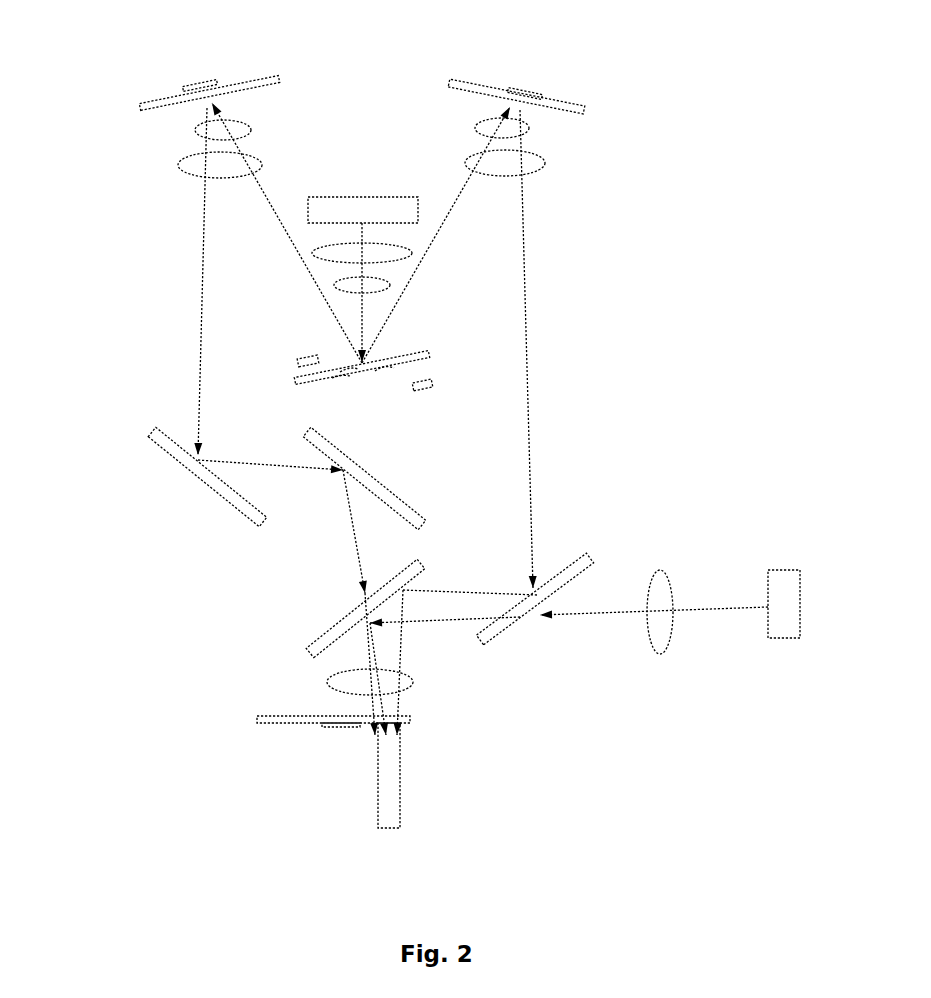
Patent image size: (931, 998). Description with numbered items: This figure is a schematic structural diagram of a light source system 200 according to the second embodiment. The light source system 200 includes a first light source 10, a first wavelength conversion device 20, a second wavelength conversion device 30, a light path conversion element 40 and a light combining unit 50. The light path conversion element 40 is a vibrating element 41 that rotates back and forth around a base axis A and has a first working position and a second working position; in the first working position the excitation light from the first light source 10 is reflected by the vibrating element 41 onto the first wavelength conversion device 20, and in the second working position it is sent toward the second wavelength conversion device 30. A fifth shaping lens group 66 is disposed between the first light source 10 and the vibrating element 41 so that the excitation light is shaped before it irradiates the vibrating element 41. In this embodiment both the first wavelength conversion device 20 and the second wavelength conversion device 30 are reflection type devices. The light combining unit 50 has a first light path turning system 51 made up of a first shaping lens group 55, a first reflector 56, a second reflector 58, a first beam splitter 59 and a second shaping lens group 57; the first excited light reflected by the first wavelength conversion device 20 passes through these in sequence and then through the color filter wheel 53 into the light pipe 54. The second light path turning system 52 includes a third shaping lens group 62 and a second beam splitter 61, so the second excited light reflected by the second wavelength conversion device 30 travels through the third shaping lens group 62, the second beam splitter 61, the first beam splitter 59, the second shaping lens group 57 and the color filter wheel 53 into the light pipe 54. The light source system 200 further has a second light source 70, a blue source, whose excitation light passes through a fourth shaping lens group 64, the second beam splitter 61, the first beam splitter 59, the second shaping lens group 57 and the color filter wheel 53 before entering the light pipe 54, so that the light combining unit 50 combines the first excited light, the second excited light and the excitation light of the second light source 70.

The light source system 200 is at (378, 46).
The first wavelength conversion device 20 is at (247, 82).
The second wavelength conversion device 30 is at (490, 82).
The first light source 10 is at (365, 197).
The first shaping lens group 55 is at (172, 165).
The third shaping lens group 62 is at (548, 155).
The fifth shaping lens group 66 is at (399, 280).
The light path conversion element 40 is at (363, 394).
The vibrating element 41 is at (317, 386).
The base axis A is at (366, 375).
The first light path turning system 51 is at (168, 496).
The first reflector 56 is at (235, 505).
The second reflector 58 is at (372, 473).
The second light path turning system 52 is at (545, 567).
The fourth shaping lens group 64 is at (658, 578).
The second light source 70 is at (780, 580).
The first beam splitter 59 is at (325, 632).
The second beam splitter 61 is at (505, 630).
The second shaping lens group 57 is at (330, 680).
The color filter wheel 53 is at (285, 722).
The light pipe 54 is at (385, 778).
The light combining unit 50 is at (324, 743).